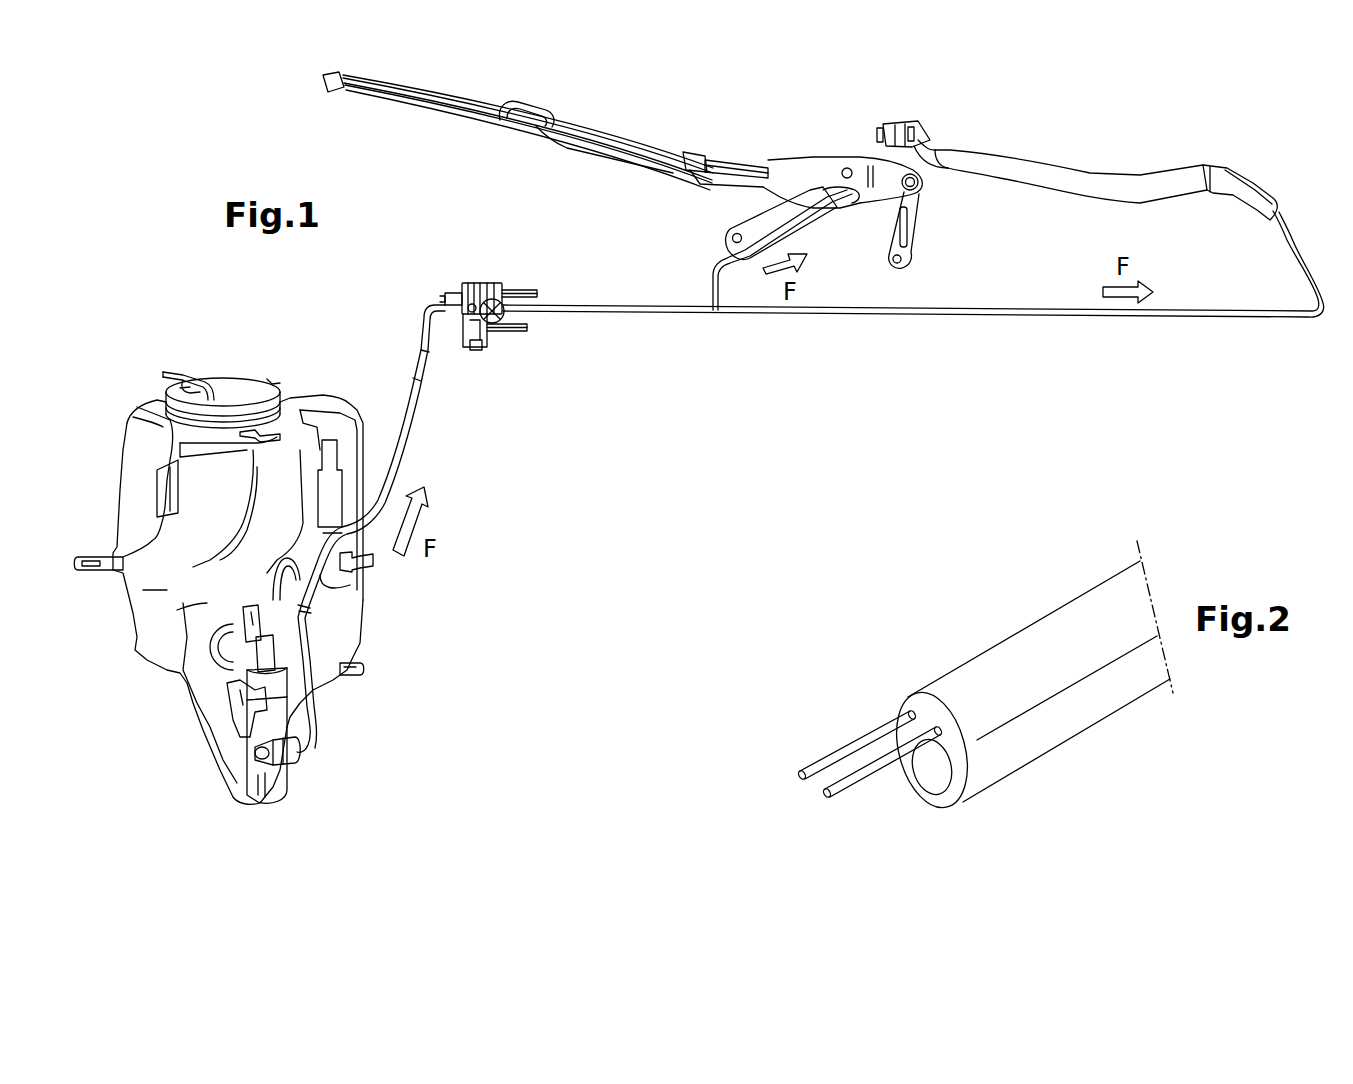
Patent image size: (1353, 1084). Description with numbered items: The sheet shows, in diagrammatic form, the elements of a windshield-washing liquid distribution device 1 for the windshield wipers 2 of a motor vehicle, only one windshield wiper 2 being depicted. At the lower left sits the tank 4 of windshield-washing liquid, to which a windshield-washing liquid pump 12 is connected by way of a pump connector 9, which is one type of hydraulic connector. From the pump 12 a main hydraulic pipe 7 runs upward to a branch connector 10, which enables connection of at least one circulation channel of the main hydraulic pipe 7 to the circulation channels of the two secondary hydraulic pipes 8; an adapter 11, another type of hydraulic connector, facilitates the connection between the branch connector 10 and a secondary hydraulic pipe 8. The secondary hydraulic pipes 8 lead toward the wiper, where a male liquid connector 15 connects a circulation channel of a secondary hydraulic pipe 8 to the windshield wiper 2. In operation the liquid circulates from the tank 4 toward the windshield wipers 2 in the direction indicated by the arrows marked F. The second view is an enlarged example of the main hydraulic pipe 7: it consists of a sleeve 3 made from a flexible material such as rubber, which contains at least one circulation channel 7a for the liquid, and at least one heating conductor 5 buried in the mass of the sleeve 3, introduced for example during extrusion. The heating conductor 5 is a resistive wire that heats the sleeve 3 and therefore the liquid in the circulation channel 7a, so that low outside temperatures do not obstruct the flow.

In FIG. 1, the windshield-washing liquid distribution device 1 is at (620, 417).
In FIG. 1, the windshield wiper 2 is at (537, 92).
In FIG. 2, the sleeve 3 is at (1060, 607).
In FIG. 1, the tank 4 is at (240, 378).
In FIG. 2, the heating conductor 5 is at (868, 765).
In FIG. 1, the main hydraulic pipe 7 is at (418, 407).
In FIG. 2, the main hydraulic pipe 7 is at (957, 626).
In FIG. 2, the circulation channel 7a is at (933, 770).
In FIG. 1, the secondary hydraulic pipe 8 is at (713, 289).
In FIG. 1, the pump connector 9 is at (255, 790).
In FIG. 1, the branch connector 10 is at (473, 283).
In FIG. 1, the adapter 11 is at (492, 312).
In FIG. 1, the windshield-washing liquid pump 12 is at (300, 750).
In FIG. 1, the male liquid connector 15 is at (900, 104).